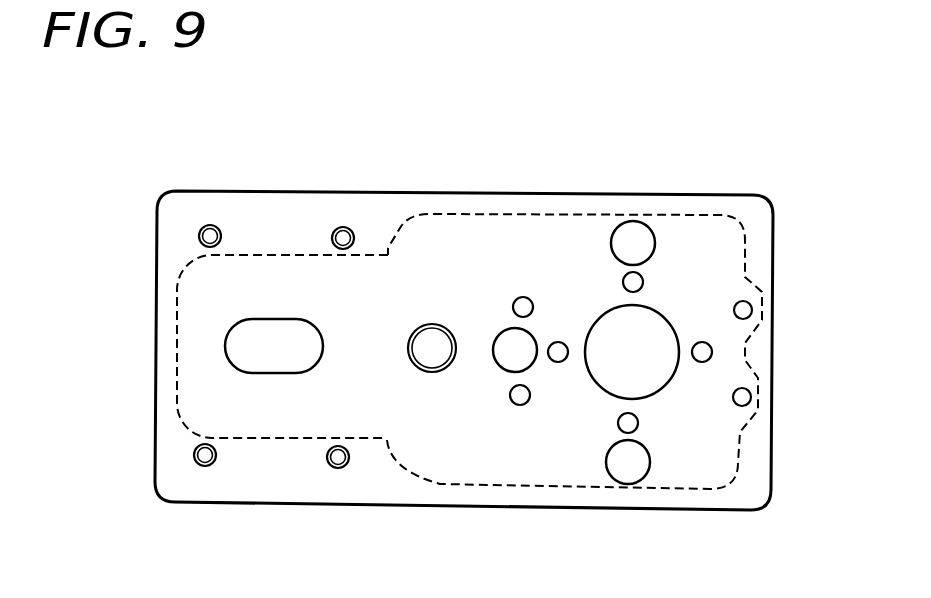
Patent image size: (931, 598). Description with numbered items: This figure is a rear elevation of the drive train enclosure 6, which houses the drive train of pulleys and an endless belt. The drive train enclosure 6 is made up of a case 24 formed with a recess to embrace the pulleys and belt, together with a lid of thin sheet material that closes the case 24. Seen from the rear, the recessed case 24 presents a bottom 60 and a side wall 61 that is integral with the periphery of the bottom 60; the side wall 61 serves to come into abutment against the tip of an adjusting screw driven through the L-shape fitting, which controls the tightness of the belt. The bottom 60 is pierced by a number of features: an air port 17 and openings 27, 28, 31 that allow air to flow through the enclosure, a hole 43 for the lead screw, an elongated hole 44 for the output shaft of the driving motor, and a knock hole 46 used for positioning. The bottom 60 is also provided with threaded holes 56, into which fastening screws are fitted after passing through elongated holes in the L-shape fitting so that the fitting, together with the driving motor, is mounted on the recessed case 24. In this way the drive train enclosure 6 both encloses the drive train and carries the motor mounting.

The drive train enclosure 6 is at (774, 293).
The air port 17 is at (419, 364).
The case 24 is at (476, 307).
The opening 27 is at (502, 362).
The opening 28 is at (618, 472).
The opening 31 is at (628, 228).
The hole 43 is at (660, 384).
The elongated hole 44 is at (240, 350).
The knock hole 46 is at (705, 355).
The threaded hole 56 is at (210, 233).
The bottom 60 is at (433, 242).
The side wall 61 is at (166, 346).